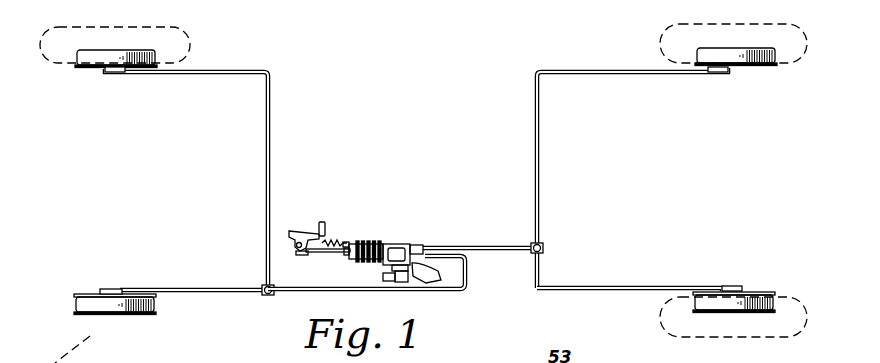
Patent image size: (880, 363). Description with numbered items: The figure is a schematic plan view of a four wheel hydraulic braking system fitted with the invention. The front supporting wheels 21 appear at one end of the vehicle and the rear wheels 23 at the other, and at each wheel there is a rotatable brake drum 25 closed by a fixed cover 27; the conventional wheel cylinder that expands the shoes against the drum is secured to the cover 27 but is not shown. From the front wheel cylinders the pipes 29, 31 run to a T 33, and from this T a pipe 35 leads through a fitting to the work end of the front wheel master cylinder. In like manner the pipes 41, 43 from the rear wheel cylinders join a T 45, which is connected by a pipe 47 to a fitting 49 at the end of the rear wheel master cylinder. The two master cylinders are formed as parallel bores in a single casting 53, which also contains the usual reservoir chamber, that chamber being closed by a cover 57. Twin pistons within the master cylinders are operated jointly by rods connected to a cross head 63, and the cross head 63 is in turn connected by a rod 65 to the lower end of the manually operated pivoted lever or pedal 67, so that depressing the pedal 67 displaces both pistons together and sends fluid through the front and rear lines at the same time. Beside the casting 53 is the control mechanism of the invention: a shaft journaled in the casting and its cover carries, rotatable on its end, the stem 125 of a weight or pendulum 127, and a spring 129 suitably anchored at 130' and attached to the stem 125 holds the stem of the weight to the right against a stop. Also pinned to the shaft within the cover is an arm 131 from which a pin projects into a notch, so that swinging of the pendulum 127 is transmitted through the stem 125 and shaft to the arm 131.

The front supporting wheels 21 is at (192, 40).
The rear wheels 23 is at (660, 36).
The brake drum 25 is at (93, 60).
The cover 27 is at (87, 294).
The pipe 29 is at (220, 76).
The pipe 31 is at (184, 289).
The T 33 is at (265, 295).
The pipe 35 is at (446, 275).
The pipe 41 is at (655, 74).
The pipe 43 is at (580, 287).
The T 45 is at (543, 246).
The pipe 47 is at (482, 247).
The fitting 49 is at (416, 250).
The casting 53 is at (382, 243).
The cover 57 is at (397, 247).
The cross head 63 is at (353, 243).
The rod 65 is at (336, 249).
The pedal 67 is at (303, 231).
The stem 125 is at (393, 274).
The weight 127 is at (390, 278).
The spring 129 is at (423, 282).
The spring anchor 130' is at (501, 241).
The arm 131 is at (425, 266).